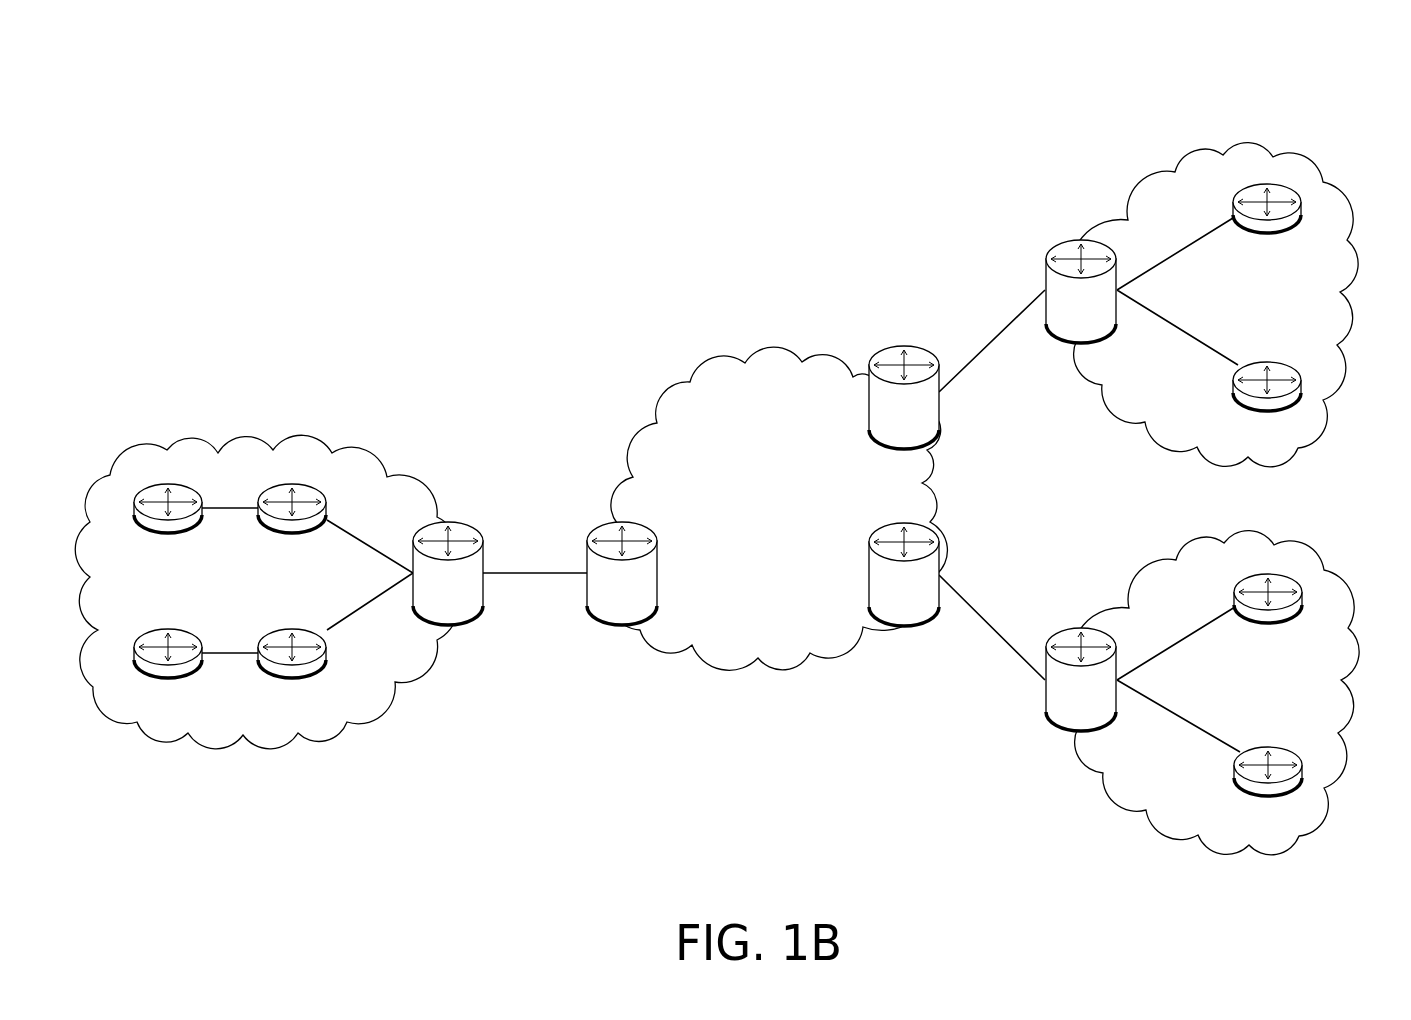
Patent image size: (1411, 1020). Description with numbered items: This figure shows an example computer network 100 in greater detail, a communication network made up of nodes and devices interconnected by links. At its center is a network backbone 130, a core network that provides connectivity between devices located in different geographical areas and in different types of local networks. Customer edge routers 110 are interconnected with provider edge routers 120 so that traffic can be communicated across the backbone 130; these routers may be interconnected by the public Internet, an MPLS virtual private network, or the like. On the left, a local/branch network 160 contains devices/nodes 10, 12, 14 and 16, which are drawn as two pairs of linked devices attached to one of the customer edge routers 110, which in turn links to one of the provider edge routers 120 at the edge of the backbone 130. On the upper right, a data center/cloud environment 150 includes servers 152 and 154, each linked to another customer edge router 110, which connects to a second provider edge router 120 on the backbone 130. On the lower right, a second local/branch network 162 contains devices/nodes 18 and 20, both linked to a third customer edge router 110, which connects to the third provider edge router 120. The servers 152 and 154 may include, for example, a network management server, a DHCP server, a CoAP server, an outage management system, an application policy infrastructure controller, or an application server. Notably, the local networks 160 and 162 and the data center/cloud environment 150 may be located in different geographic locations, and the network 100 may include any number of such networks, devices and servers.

The computer network 100 is at (1307, 90).
The device/node 10 is at (168, 524).
The device/node 12 is at (292, 524).
The device/node 14 is at (168, 668).
The device/node 16 is at (292, 668).
The device/node 18 is at (1268, 788).
The device/node 20 is at (1268, 613).
The customer edge router 110 is at (431, 610).
The provider edge router 120 is at (605, 610).
The network backbone 130 is at (788, 532).
The data center/cloud environment 150 is at (1179, 171).
The server 152 is at (1267, 225).
The server 154 is at (1267, 402).
The local/branch network 160 is at (307, 431).
The local/branch network 162 is at (1097, 775).